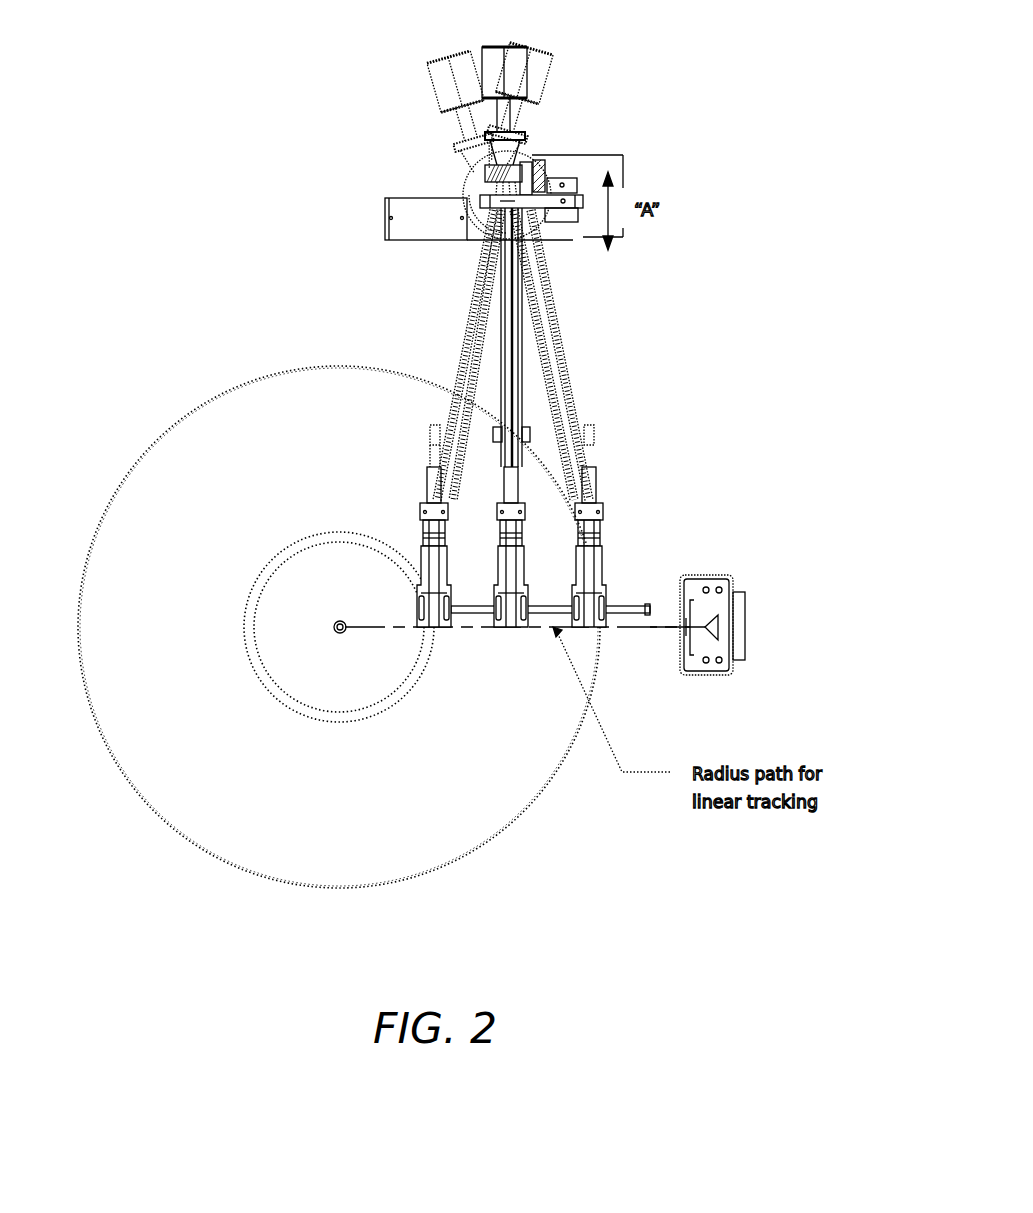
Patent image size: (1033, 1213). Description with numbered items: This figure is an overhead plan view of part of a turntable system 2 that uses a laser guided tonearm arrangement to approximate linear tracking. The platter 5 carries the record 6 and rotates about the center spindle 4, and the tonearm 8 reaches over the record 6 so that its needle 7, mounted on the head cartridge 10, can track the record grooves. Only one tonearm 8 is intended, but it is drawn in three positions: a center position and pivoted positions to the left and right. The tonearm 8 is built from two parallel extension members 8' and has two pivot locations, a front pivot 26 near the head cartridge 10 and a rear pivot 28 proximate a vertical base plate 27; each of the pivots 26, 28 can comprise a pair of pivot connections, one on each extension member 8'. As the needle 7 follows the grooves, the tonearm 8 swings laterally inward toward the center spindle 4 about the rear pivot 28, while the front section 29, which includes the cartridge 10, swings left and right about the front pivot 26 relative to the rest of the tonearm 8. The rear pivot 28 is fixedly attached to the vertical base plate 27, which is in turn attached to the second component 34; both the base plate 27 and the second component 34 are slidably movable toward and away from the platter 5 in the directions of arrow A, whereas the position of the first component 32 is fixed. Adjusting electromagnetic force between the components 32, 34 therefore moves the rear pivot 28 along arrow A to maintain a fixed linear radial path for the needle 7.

The turntable system 2 is at (117, 374).
The center spindle 4 is at (337, 625).
The platter 5 is at (203, 410).
The record 6 is at (445, 753).
The needle 7 is at (513, 630).
The tonearm 8 is at (606, 355).
The extension members 8' is at (477, 354).
The head cartridge 10 is at (457, 535).
The front pivot 26 is at (441, 500).
The vertical base plate 27 is at (580, 192).
The rear pivot 28 is at (492, 210).
The front section 29 is at (612, 537).
The first component 32 is at (570, 177).
The second component 34 is at (573, 220).